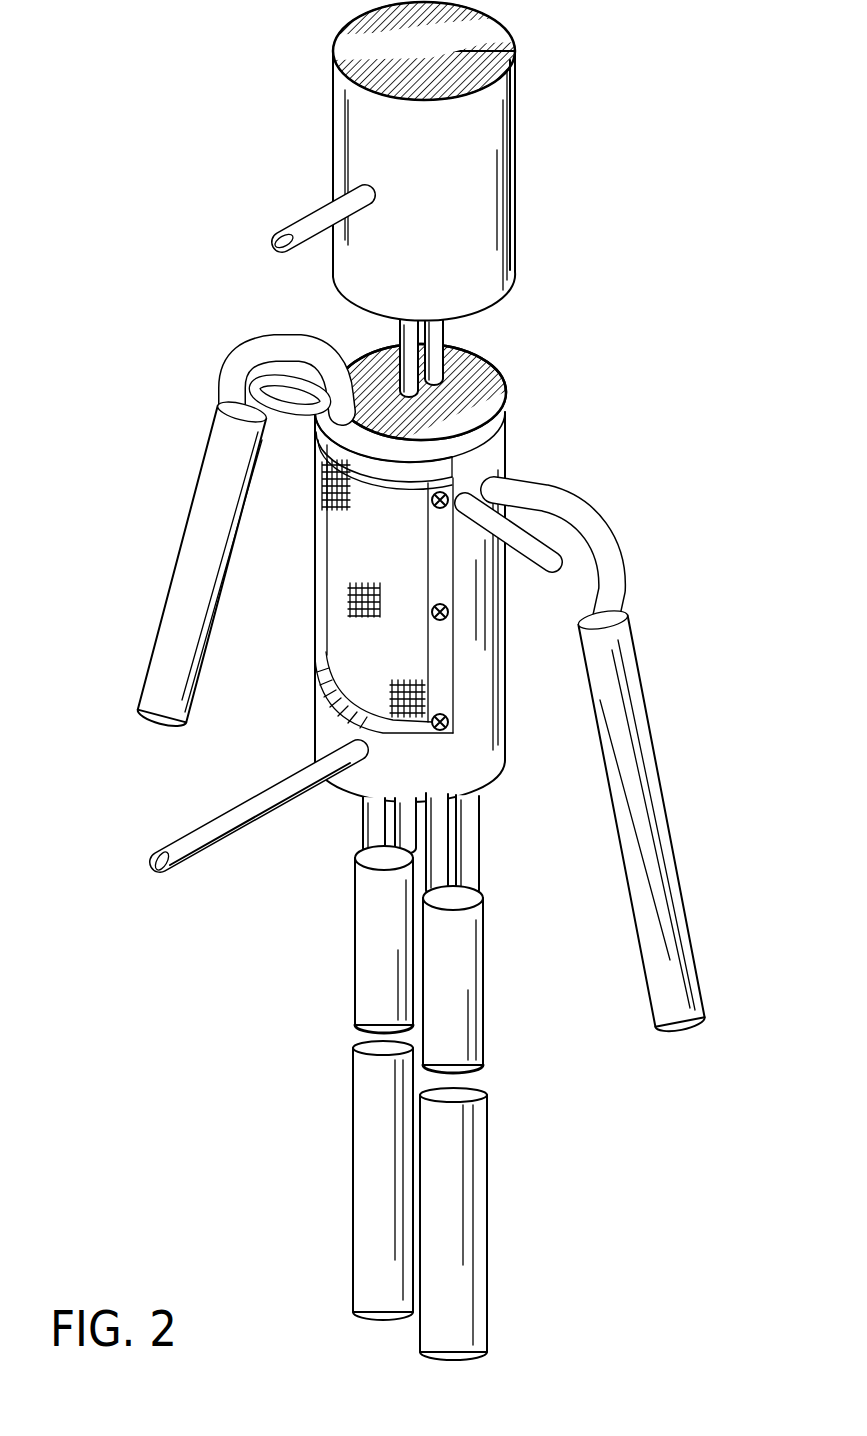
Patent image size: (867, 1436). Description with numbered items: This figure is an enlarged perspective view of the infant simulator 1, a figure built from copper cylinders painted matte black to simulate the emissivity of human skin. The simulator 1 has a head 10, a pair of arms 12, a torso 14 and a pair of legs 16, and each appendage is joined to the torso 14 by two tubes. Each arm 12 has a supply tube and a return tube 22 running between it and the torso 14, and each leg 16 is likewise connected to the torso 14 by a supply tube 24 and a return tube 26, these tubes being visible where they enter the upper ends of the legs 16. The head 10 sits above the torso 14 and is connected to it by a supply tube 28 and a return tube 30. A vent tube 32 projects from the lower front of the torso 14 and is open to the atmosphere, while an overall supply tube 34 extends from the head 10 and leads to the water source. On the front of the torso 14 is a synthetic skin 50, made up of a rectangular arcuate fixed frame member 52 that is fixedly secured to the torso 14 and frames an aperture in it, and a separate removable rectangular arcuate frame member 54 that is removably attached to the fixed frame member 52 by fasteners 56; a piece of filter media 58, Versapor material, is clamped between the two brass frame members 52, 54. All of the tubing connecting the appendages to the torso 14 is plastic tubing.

The simulator 1 is at (95, 1072).
The head 10 is at (519, 72).
The arms 12 is at (185, 527).
The torso 14 is at (505, 724).
The legs 16 is at (350, 968).
The return tube 22 is at (312, 352).
The supply tube 24 is at (378, 830).
The return tube 26 is at (385, 811).
The supply tube 28 is at (401, 378).
The return tube 30 is at (455, 334).
The vent tube 32 is at (195, 862).
The overall supply tube 34 is at (305, 208).
The synthetic skin 50 is at (295, 660).
The fixed frame member 52 is at (485, 433).
The removable frame member 54 is at (447, 476).
The fasteners 56 is at (442, 714).
The filter media 58 is at (392, 550).